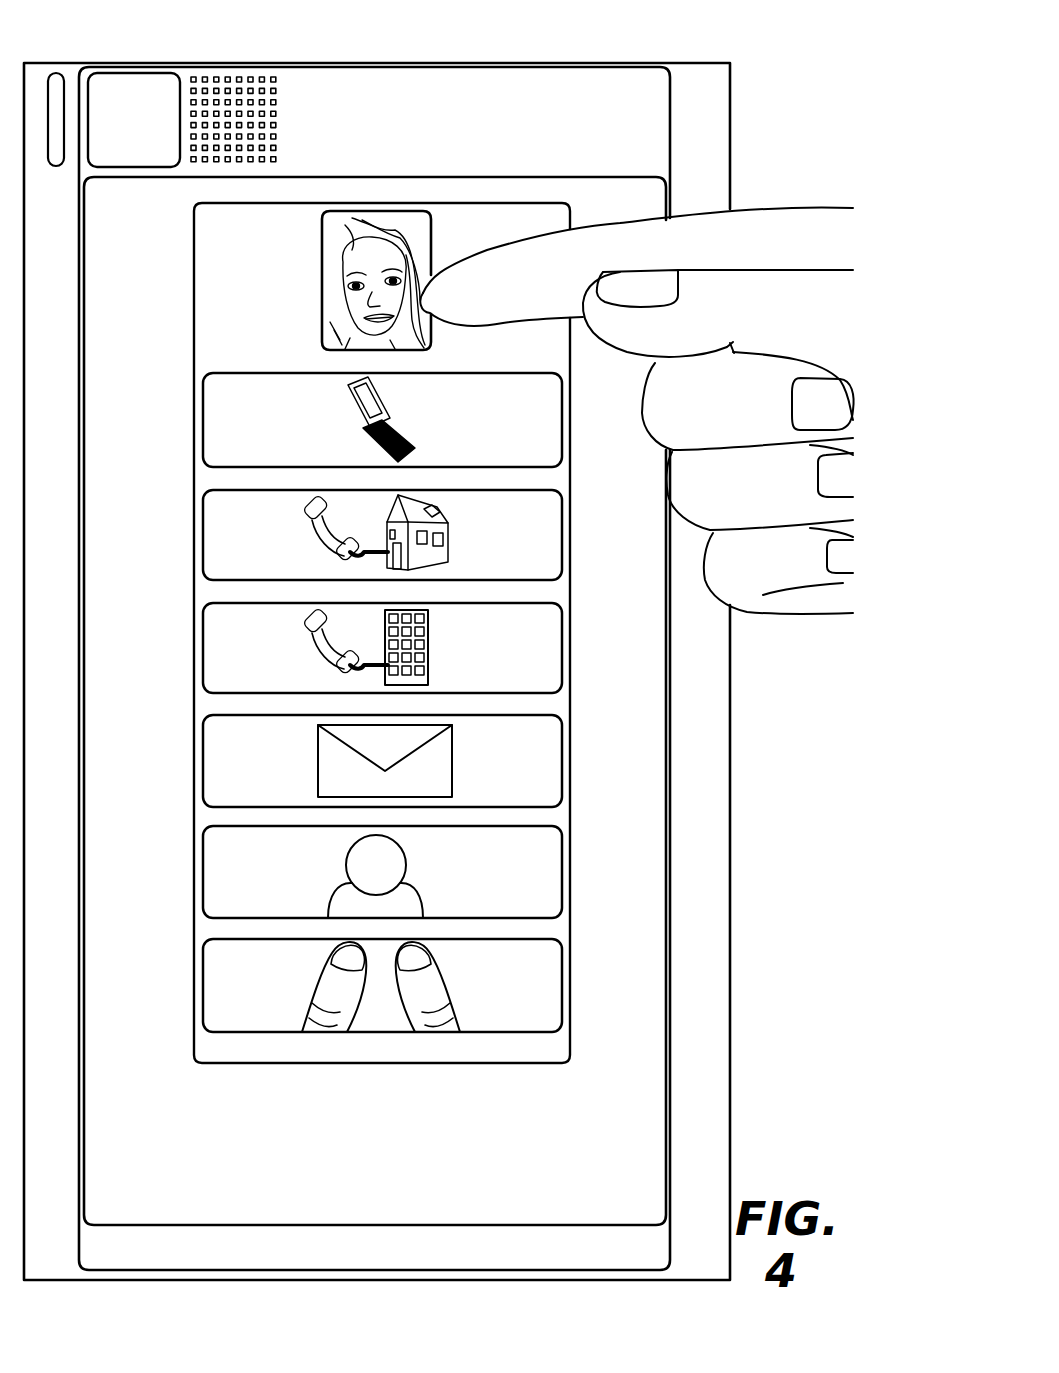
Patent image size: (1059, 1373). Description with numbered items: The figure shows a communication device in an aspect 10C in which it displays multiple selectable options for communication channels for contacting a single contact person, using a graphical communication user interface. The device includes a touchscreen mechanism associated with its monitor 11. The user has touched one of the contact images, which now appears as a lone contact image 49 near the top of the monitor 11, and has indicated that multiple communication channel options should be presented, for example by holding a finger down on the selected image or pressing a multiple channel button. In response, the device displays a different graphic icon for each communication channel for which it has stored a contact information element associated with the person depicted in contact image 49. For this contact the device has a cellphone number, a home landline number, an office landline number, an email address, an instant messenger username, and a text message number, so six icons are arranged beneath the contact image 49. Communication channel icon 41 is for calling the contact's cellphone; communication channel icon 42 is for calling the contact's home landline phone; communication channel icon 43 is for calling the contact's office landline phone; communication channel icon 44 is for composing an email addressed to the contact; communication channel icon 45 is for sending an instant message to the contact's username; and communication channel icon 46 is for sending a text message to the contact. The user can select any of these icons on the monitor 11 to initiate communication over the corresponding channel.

The aspect of communication device 10C is at (775, 92).
The monitor 11 is at (668, 858).
The contact image 49 is at (322, 273).
The communication channel icon 41 is at (203, 420).
The communication channel icon 42 is at (203, 535).
The communication channel icon 43 is at (203, 648).
The communication channel icon 44 is at (203, 761).
The communication channel icon 45 is at (203, 872).
The communication channel icon 46 is at (203, 985).